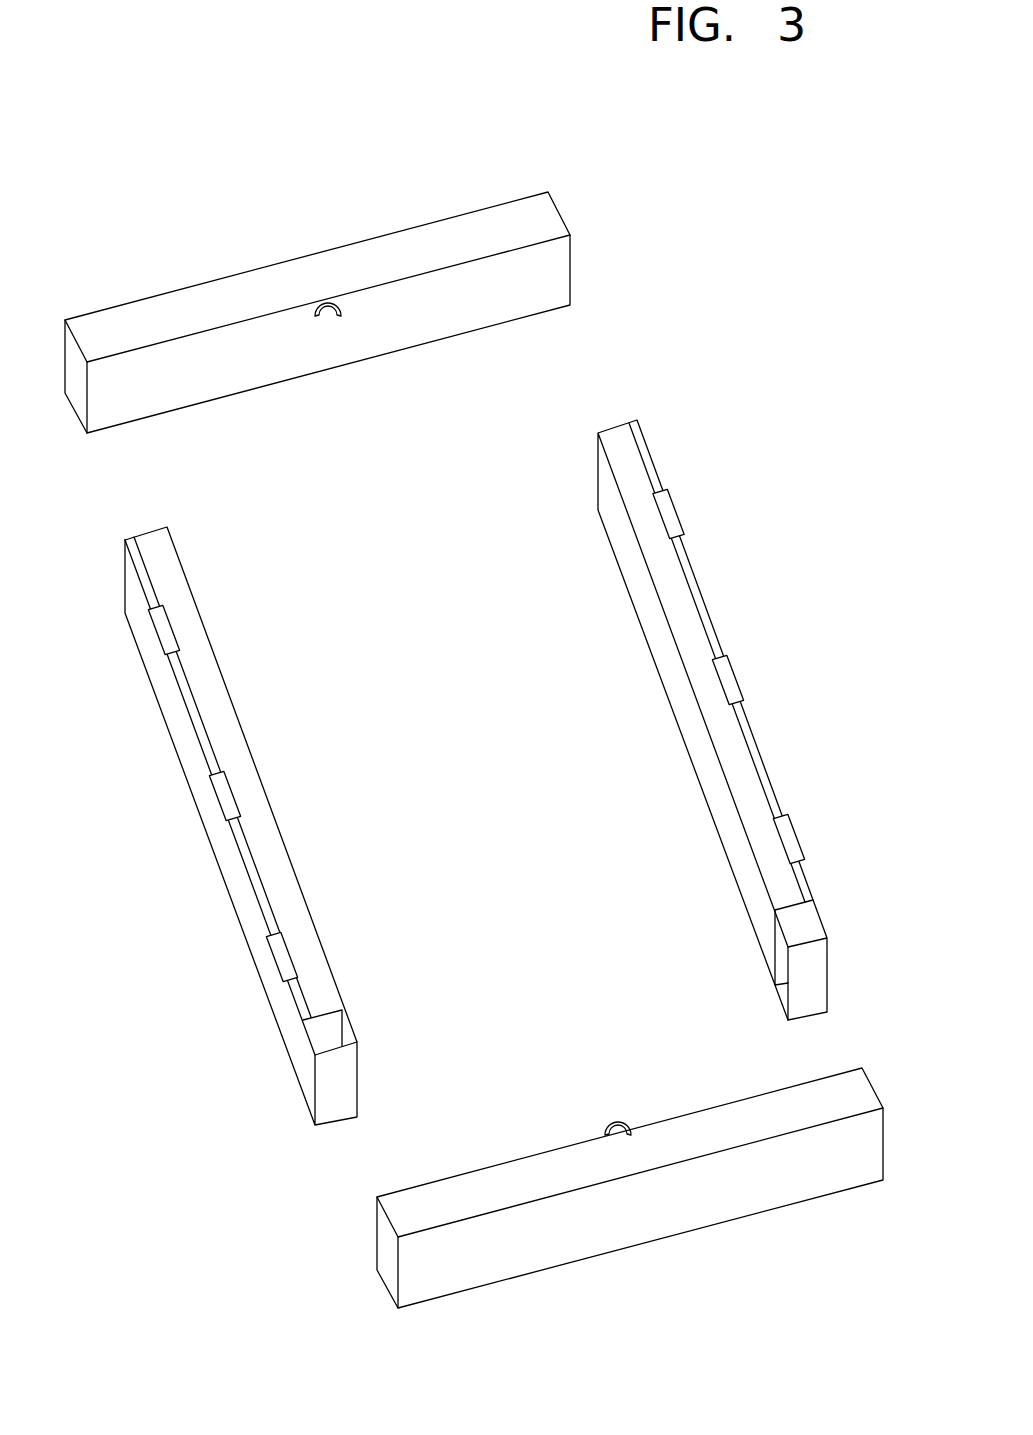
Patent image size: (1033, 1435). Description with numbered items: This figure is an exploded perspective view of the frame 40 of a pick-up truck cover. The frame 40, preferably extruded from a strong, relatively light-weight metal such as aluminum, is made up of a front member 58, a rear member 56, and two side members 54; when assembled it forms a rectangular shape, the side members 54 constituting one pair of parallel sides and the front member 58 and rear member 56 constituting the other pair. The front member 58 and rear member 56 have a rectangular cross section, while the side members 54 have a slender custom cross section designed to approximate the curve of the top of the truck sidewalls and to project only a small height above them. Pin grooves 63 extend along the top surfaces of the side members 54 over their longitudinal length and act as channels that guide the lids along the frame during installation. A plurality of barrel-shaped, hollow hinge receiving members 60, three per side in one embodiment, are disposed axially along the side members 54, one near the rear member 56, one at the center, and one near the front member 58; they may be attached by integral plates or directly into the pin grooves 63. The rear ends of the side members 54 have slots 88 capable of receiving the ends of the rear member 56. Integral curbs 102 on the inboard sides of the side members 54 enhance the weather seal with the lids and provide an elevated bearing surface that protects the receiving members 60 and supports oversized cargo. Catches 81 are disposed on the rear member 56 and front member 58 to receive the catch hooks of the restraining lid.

The frame 40 is at (122, 108).
The side member 54 is at (463, 772).
The rear member 56 is at (617, 1222).
The front member 58 is at (157, 320).
The hinge receiving member 60 is at (668, 515).
The pin groove 63 is at (697, 595).
The catch 81 is at (326, 300).
The slot 88 is at (792, 923).
The curb 102 is at (208, 692).